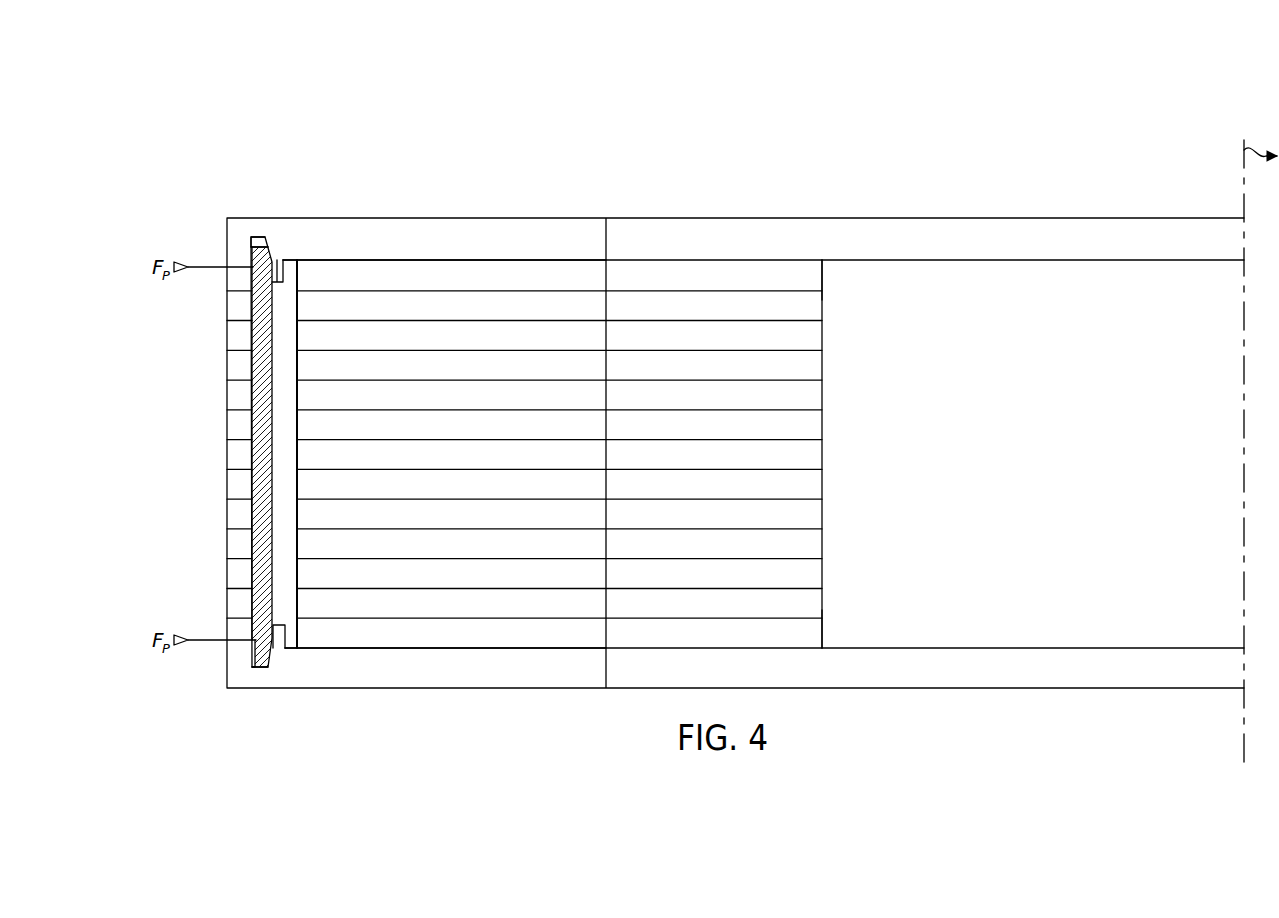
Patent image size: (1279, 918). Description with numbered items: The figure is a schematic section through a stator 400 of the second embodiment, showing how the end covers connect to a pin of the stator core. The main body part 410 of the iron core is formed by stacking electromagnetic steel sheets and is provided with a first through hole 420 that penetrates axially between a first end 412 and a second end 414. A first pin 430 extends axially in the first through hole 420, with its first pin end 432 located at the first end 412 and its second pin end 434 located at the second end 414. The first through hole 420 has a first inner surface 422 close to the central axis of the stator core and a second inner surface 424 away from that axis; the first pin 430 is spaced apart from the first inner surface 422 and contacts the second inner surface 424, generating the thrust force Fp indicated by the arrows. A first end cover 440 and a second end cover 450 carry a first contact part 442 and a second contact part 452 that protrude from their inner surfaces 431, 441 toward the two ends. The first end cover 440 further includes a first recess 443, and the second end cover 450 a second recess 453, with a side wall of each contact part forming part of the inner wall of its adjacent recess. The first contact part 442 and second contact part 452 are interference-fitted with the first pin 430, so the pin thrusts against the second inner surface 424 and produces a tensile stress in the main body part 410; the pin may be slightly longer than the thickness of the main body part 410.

The stator 400 is at (874, 127).
The main body part 410 is at (531, 470).
The first end 412 is at (812, 271).
The second end 414 is at (822, 640).
The first through hole 420 is at (284, 596).
The first inner surface 422 is at (297, 513).
The second inner surface 424 is at (248, 421).
The first pin 430 is at (235, 469).
The inner surface of first end cover 431 is at (418, 262).
The first pin end 432 is at (258, 262).
The second pin end 434 is at (254, 670).
The first end cover 440 is at (758, 221).
The inner surface of second end cover 441 is at (428, 644).
The first contact part 442 is at (280, 272).
The first recess 443 is at (258, 243).
The second end cover 450 is at (758, 690).
The second contact part 452 is at (286, 649).
The second recess 453 is at (263, 668).